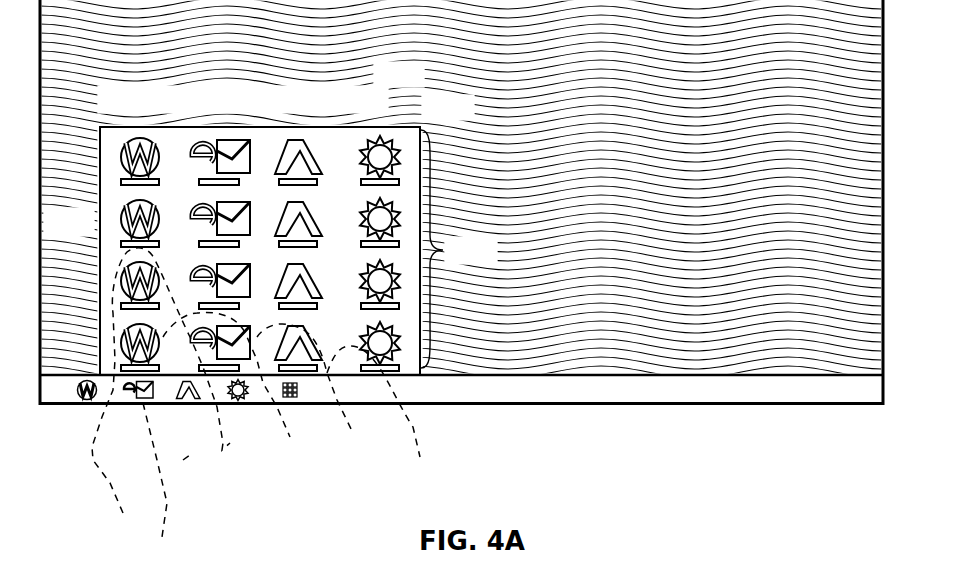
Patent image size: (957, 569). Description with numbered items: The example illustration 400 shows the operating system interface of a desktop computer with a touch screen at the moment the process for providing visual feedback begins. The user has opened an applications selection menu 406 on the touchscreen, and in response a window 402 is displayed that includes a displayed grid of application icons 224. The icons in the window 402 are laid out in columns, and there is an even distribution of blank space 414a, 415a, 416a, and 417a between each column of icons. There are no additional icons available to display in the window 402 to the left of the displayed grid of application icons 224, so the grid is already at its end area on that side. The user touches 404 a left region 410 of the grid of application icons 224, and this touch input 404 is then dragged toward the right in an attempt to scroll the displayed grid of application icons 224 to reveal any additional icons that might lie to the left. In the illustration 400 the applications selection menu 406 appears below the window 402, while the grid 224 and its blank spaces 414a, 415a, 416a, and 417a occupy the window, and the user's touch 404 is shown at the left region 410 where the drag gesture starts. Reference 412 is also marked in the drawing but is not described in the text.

The example illustration 400 is at (774, 446).
The content 224 is at (456, 249).
The window 402 is at (408, 127).
The grid of application icons 412 is at (380, 127).
The blank space 414a is at (110, 151).
The blank space 415a is at (174, 151).
The blank space 416a is at (271, 151).
The blank space 417a is at (338, 151).
The left region 410 is at (111, 258).
The applications selection menu 406 is at (327, 394).
The touch input 404 is at (417, 444).